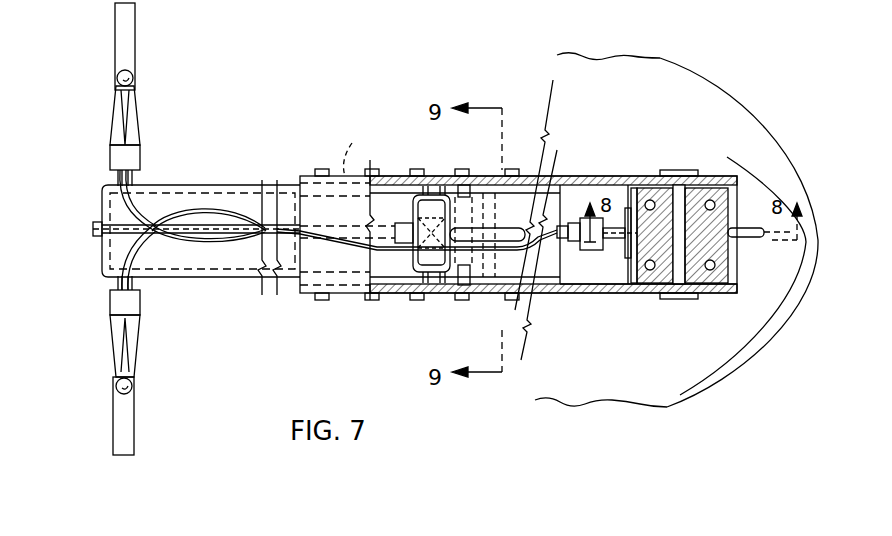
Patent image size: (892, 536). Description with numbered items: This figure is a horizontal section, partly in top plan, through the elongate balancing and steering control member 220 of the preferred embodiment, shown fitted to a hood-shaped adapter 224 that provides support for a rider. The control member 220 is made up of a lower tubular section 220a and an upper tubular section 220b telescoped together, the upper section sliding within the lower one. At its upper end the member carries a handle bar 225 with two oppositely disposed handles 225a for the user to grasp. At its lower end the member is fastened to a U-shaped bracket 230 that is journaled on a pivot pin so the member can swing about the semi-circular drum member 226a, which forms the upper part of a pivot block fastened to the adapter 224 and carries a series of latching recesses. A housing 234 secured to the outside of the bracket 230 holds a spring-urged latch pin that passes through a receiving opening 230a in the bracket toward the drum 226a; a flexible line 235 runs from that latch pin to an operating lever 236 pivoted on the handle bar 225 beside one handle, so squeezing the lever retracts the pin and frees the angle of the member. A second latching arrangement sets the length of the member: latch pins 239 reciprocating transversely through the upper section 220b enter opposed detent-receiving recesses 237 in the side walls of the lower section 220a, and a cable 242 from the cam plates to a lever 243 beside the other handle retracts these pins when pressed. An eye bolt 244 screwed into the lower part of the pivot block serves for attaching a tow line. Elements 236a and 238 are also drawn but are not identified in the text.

The elongate balancing and steering control member 220 is at (308, 173).
The lower telescoped tubular section 220a is at (548, 176).
The upper telescoped tubular section 220b is at (165, 279).
The adapter 224 is at (692, 375).
The handle bar 225 is at (108, 282).
The handles 225a is at (127, 30).
The semi-circular drum member 226a is at (653, 200).
The U-shaped bracket 230 is at (725, 175).
The receiving opening 230a is at (618, 290).
The housing 234 is at (605, 250).
The flexible line 235 is at (196, 205).
The operating lever 236 is at (125, 352).
The retainer plate 236a is at (708, 300).
The detent-receiving latching elements 237 is at (393, 170).
The yoke 238 is at (447, 173).
The latch pins 239 is at (475, 172).
The cable 242 is at (214, 243).
The lever 243 is at (125, 128).
The eye bolt 244 is at (756, 246).